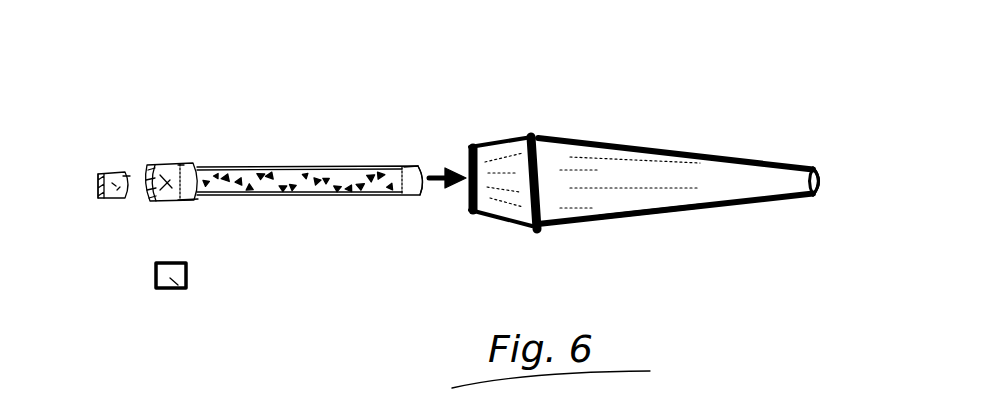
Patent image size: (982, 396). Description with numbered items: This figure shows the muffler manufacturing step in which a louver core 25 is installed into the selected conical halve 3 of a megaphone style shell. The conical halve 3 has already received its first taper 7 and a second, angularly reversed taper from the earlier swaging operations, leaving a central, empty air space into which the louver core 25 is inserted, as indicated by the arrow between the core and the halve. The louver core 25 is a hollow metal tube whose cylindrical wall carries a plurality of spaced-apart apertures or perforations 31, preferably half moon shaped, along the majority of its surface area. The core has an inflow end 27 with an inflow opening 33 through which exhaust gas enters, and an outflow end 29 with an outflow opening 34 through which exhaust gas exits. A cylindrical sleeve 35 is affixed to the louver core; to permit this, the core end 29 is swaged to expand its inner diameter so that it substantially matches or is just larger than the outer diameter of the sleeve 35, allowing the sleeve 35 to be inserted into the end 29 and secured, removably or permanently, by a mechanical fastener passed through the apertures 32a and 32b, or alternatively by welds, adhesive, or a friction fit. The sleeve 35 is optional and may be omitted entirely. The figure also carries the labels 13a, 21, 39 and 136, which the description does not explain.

The conical halve 3 is at (643, 126).
The first taper 7 is at (652, 196).
The distal opening 13a is at (825, 185).
The annular band 21 is at (503, 160).
The louver core 25 is at (332, 205).
The inflow end 27 is at (412, 167).
The outflow end 29 is at (181, 166).
The perforations 31 is at (237, 168).
The aperture 32a is at (180, 205).
The aperture 32b is at (126, 174).
The inflow opening 33 is at (424, 165).
The outflow opening 34 is at (148, 195).
The cylindrical sleeve 35 is at (112, 198).
The square element 39 is at (185, 290).
The proximal face 136 is at (470, 203).